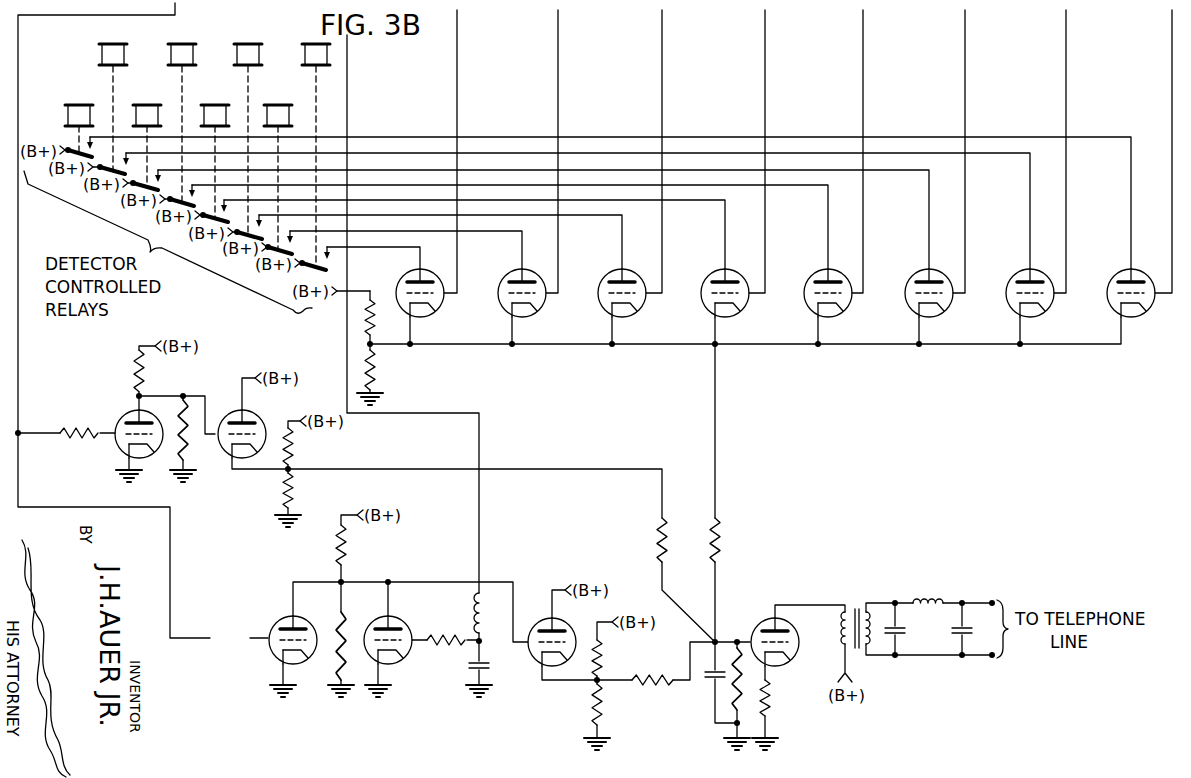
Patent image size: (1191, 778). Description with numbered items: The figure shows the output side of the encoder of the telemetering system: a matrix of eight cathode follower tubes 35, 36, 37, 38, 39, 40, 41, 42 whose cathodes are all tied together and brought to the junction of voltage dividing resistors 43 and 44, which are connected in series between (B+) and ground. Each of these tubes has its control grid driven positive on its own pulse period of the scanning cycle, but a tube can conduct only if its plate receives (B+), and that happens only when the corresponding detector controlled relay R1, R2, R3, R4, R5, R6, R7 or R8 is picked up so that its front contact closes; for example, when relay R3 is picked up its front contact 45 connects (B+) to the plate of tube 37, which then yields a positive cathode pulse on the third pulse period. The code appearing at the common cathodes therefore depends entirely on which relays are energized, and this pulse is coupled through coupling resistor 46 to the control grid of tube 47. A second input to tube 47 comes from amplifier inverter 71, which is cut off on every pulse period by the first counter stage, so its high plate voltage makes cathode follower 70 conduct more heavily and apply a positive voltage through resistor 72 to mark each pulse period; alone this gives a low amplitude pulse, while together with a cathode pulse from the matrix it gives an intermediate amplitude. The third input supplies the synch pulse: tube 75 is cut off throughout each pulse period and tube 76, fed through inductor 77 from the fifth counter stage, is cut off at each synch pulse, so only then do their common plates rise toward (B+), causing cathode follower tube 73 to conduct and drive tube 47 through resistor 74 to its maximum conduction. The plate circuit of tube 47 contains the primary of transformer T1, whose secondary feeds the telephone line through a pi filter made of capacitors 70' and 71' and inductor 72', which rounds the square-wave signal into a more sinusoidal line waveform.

The cathode follower tube 35 is at (428, 316).
The cathode follower tube 36 is at (530, 316).
The cathode follower tube 37 is at (630, 316).
The cathode follower tube 38 is at (733, 316).
The cathode follower tube 39 is at (836, 316).
The cathode follower tube 40 is at (937, 316).
The cathode follower tube 41 is at (1038, 316).
The cathode follower tube 42 is at (1139, 316).
The voltage dividing resistor 43 is at (382, 317).
The voltage dividing resistor 44 is at (380, 368).
The front contact 45 is at (246, 229).
The coupling resistor 46 is at (722, 537).
The output tube 47 is at (758, 619).
The cathode follower 70 is at (235, 423).
The amplifier inverter 71 is at (124, 438).
The resistor 72 is at (642, 540).
The cathode follower tube 73 is at (532, 657).
The resistor 74 is at (652, 668).
The tube 75 is at (275, 623).
The tube 76 is at (398, 619).
The inductor 77 is at (473, 612).
The capacitor 70' is at (911, 641).
The capacitor 71' is at (946, 621).
The inductor 72' is at (933, 587).
The transformer T1 is at (856, 607).
The detector controlled relay R1 is at (312, 43).
The detector controlled relay R2 is at (268, 104).
The detector controlled relay R3 is at (255, 42).
The detector controlled relay R4 is at (227, 102).
The detector controlled relay R5 is at (187, 43).
The detector controlled relay R6 is at (163, 103).
The detector controlled relay R7 is at (117, 43).
The detector controlled relay R8 is at (88, 103).